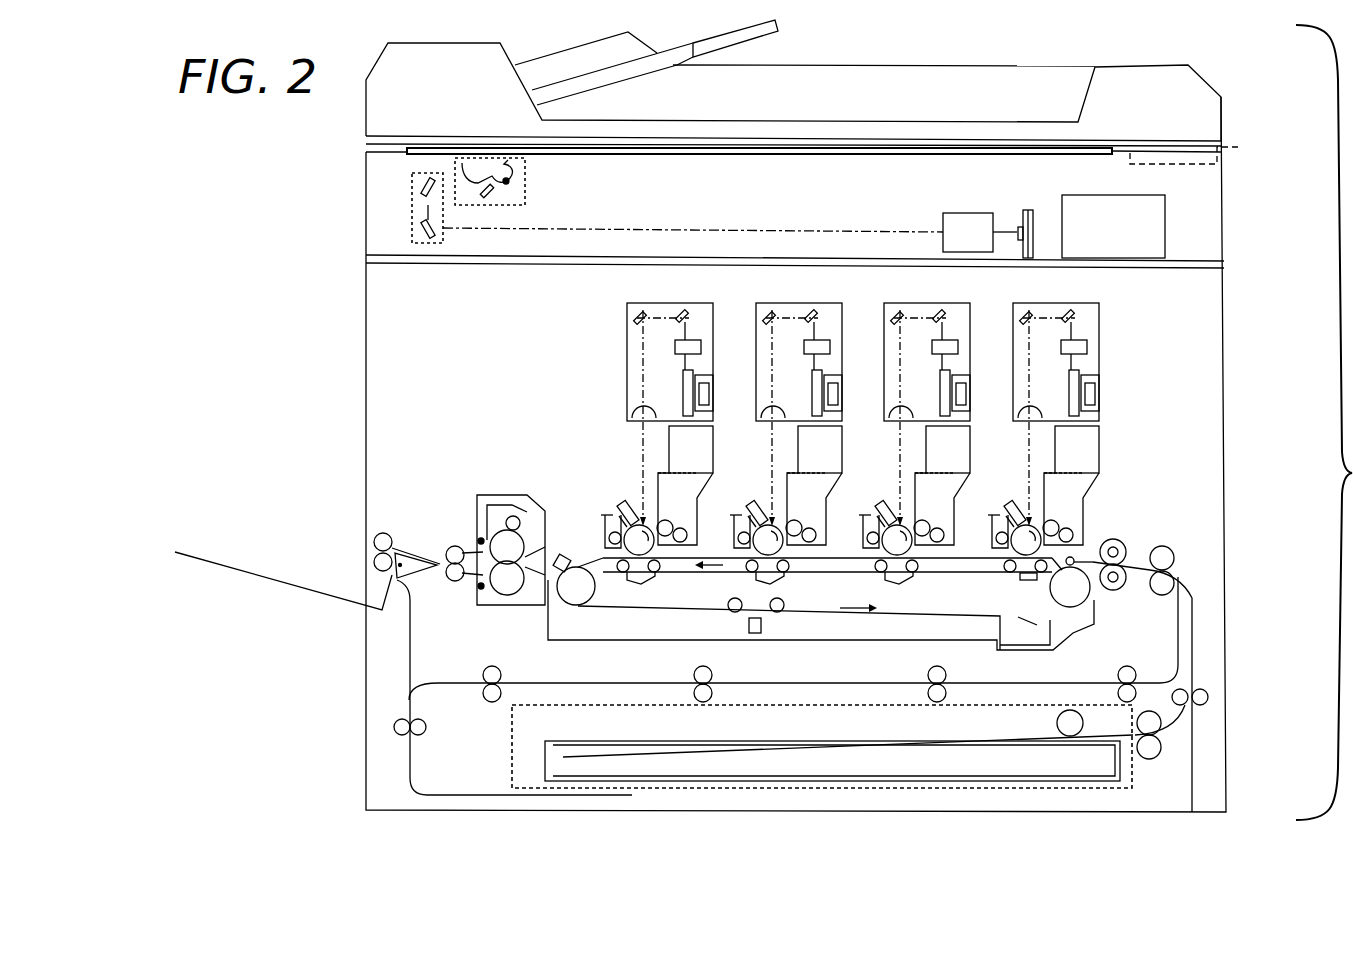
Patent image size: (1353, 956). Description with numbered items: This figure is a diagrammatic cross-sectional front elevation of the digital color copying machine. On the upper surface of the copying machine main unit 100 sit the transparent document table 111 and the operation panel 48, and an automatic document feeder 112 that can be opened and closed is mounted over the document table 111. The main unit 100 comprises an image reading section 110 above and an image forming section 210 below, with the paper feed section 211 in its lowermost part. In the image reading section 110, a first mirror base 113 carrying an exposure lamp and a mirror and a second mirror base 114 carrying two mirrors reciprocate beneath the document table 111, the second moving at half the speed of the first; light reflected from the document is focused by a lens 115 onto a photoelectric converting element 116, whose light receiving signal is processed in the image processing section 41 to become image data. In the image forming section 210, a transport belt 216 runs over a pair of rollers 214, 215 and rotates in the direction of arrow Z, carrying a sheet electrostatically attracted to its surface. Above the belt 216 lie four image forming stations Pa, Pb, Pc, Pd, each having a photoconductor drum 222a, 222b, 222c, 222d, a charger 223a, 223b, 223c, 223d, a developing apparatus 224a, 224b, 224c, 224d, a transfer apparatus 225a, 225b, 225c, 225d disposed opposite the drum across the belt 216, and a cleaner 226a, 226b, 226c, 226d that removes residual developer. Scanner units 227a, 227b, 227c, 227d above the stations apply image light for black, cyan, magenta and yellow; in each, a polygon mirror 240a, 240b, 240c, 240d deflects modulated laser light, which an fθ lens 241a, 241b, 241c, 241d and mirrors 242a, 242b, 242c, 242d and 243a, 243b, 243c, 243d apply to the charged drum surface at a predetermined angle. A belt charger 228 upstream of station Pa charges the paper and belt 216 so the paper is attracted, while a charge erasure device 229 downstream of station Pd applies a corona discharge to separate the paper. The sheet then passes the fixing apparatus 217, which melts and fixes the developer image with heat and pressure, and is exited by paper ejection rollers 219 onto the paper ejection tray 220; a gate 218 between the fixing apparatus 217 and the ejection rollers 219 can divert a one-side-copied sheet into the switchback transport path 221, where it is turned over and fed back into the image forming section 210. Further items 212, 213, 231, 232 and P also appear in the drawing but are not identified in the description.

The copying machine main unit 100 is at (1222, 250).
The image reading section 110 is at (1203, 203).
The document table 111 is at (953, 145).
The automatic document feeder 112 is at (1205, 122).
The first mirror base 113 is at (455, 172).
The second mirror base 114 is at (412, 230).
The lens 115 is at (990, 213).
The photoelectric converting element 116 is at (1027, 210).
The image processing section 41 is at (1137, 205).
The operation panel 48 is at (1201, 149).
The image forming section 210 is at (1172, 422).
The paper feed section 211 is at (1178, 757).
The paper conveying rollers 212 is at (1125, 542).
The intermediate transfer belt 213 is at (892, 630).
The roller 214 is at (603, 604).
The roller 215 is at (1075, 612).
The transport belt 216 is at (960, 617).
The fixing apparatus 217 is at (503, 505).
The gate 218 is at (432, 552).
The paper ejection rollers 219 is at (385, 530).
The paper ejection tray 220 is at (272, 578).
The switchback transport path 221 is at (413, 753).
The photoconductor drum 222a is at (1071, 509).
The photoconductor drum 222b is at (942, 509).
The photoconductor drum 222c is at (814, 509).
The photoconductor drum 222d is at (685, 509).
The charger 223a is at (1009, 507).
The charger 223b is at (880, 507).
The charger 223c is at (751, 507).
The charger 223d is at (622, 507).
The developing apparatus 224a is at (1068, 470).
The developing apparatus 224b is at (939, 470).
The developing apparatus 224c is at (811, 470).
The developing apparatus 224d is at (682, 470).
The transfer apparatus 225a is at (1016, 578).
The transfer apparatus 225b is at (908, 578).
The transfer apparatus 225c is at (779, 578).
The transfer apparatus 225d is at (650, 578).
The cleaner 226a is at (982, 532).
The cleaner 226b is at (853, 532).
The cleaner 226c is at (724, 532).
The cleaner 226d is at (595, 532).
The scanner unit 227a is at (1108, 304).
The scanner unit 227b is at (979, 306).
The scanner unit 227c is at (851, 304).
The scanner unit 227d is at (722, 304).
The belt charger 228 is at (1076, 560).
The charge erasure device 229 is at (562, 553).
The registration rollers 231 is at (726, 612).
The sensor 232 is at (765, 625).
The polygon mirror 240a is at (1079, 370).
The polygon mirror 240b is at (950, 370).
The polygon mirror 240c is at (822, 370).
The polygon mirror 240d is at (693, 370).
The fθ lens 241a is at (1087, 344).
The fθ lens 241b is at (958, 344).
The fθ lens 241c is at (830, 344).
The fθ lens 241d is at (701, 344).
The mirror 242a is at (1071, 311).
The mirror 242b is at (942, 311).
The mirror 242c is at (814, 311).
The mirror 242d is at (685, 311).
The mirror 243a is at (1028, 312).
The mirror 243b is at (899, 312).
The mirror 243c is at (771, 312).
The mirror 243d is at (642, 312).
The image forming station Pa is at (1023, 489).
The image forming station Pb is at (894, 489).
The image forming station Pc is at (765, 489).
The image forming station Pd is at (636, 489).
The recording paper P is at (848, 737).
The belt rotation direction arrow Z is at (827, 585).